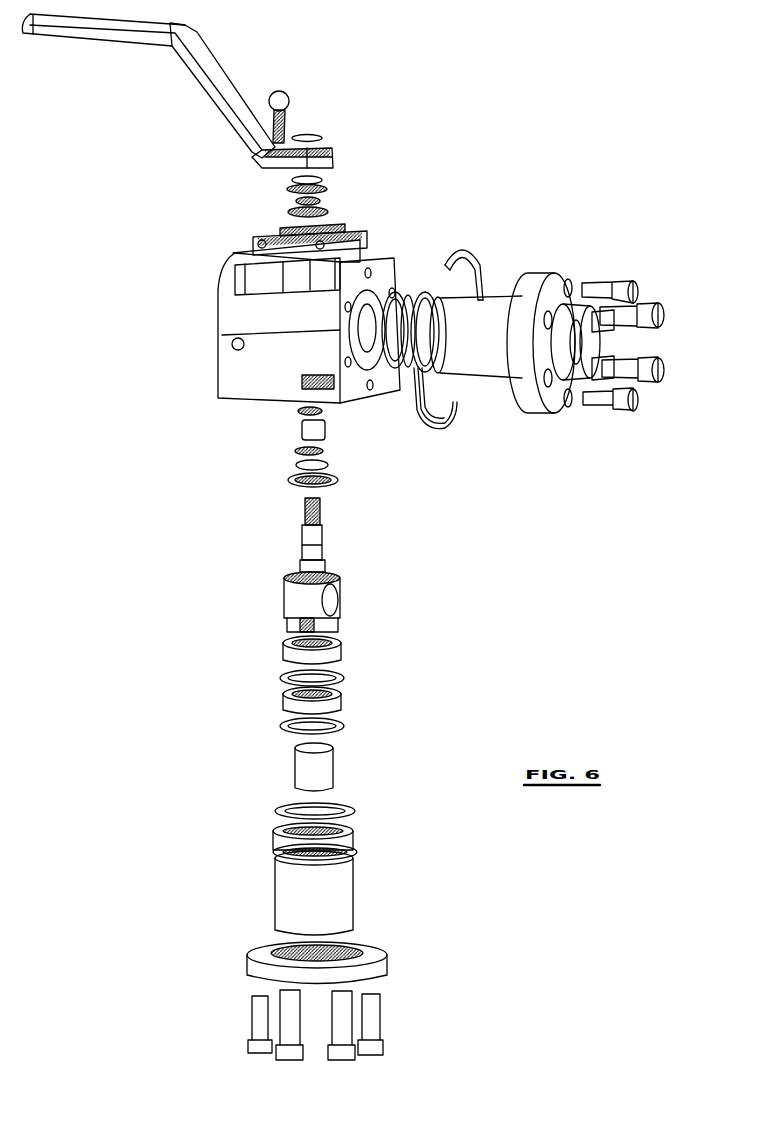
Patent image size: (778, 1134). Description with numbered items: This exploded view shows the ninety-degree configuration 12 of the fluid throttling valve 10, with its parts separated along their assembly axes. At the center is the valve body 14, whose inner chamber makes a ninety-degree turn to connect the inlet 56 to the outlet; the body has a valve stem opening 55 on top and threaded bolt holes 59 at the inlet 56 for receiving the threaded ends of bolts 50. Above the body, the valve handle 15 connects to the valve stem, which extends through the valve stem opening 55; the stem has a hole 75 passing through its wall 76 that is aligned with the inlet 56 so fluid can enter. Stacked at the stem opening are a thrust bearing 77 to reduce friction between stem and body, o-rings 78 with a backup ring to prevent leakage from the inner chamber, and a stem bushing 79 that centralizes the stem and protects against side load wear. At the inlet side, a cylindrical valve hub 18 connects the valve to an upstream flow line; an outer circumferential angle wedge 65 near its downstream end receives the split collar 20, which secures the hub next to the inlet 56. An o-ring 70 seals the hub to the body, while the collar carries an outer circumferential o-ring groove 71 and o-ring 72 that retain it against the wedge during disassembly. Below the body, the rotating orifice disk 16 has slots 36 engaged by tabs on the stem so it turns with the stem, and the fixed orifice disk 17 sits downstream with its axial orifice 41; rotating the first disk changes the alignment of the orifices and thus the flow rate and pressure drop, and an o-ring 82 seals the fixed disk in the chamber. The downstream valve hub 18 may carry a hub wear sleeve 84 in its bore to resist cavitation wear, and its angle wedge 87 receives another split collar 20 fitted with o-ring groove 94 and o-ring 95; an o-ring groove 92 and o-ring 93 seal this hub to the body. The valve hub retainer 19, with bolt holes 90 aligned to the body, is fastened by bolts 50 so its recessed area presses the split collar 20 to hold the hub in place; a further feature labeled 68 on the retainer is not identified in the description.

The fluid throttling valve 10 is at (492, 122).
The 90-degree configuration 12 is at (212, 328).
The valve body 14 is at (218, 392).
The valve handle 15 is at (190, 70).
The rotating orifice disk 16 is at (288, 650).
The fixed orifice disk 17 is at (342, 700).
The valve hub 18 is at (495, 380).
The valve hub retainer 19 is at (565, 410).
The valve hub split collar 20 is at (485, 254).
The slots 36 is at (285, 640).
The axial orifice 41 is at (285, 697).
The bolts 50 is at (633, 410).
The valve stem opening 55 is at (256, 250).
The inlet 56 is at (384, 262).
The threaded bolt holes 59 is at (368, 268).
The outer circumferential angle wedge 65 is at (445, 372).
The bolt holes 68 is at (572, 285).
The o-ring 70 is at (390, 300).
The outer circumferential o-ring groove 71 is at (436, 300).
The o-ring 72 is at (408, 305).
The hole 75 is at (333, 603).
The wall 76 is at (297, 410).
The thrust bearing 77 is at (290, 480).
The o-rings 78 is at (325, 451).
The stem bushing 79 is at (330, 430).
The o-ring 82 is at (282, 678).
The hub wear sleeve 84 is at (293, 757).
The outer circumferential angle wedge 87 is at (272, 843).
The bolt holes 90 is at (385, 947).
The o-ring groove 92 is at (273, 825).
The o-ring 93 is at (348, 727).
The outer circumferential o-ring groove 94 is at (273, 855).
The o-ring 95 is at (270, 820).